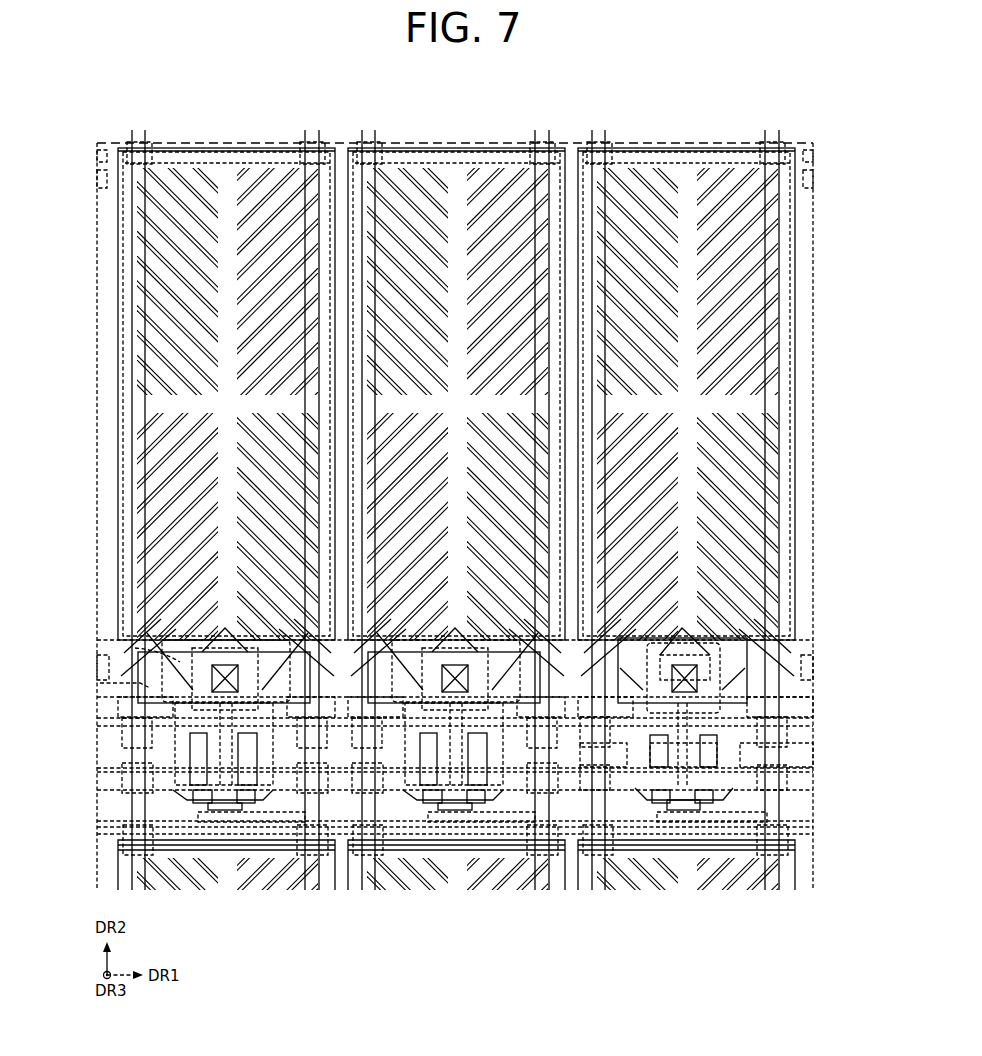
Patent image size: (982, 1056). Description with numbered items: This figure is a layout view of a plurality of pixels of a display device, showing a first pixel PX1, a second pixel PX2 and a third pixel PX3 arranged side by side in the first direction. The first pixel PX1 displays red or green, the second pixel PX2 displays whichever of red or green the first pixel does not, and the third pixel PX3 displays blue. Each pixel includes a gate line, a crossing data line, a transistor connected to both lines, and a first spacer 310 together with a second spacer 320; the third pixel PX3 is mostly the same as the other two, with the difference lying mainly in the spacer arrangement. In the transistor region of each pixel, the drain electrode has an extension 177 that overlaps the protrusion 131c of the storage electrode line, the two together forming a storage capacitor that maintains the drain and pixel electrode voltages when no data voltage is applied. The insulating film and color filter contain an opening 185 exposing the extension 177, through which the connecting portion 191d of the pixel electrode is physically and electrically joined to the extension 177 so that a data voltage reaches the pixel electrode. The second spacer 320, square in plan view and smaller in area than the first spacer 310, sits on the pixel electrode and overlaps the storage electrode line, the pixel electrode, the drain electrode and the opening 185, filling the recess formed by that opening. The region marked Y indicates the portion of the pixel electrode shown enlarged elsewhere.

The first pixel PX1 is at (213, 136).
The second pixel PX2 is at (443, 136).
The third pixel PX3 is at (673, 136).
The protrusion 131c is at (135, 648).
The first spacer 310 is at (100, 683).
The connecting portion 191d is at (770, 632).
The extension 177 is at (750, 650).
The second spacer 320 is at (727, 665).
The opening 185 is at (697, 682).
The Y portion Y is at (790, 707).